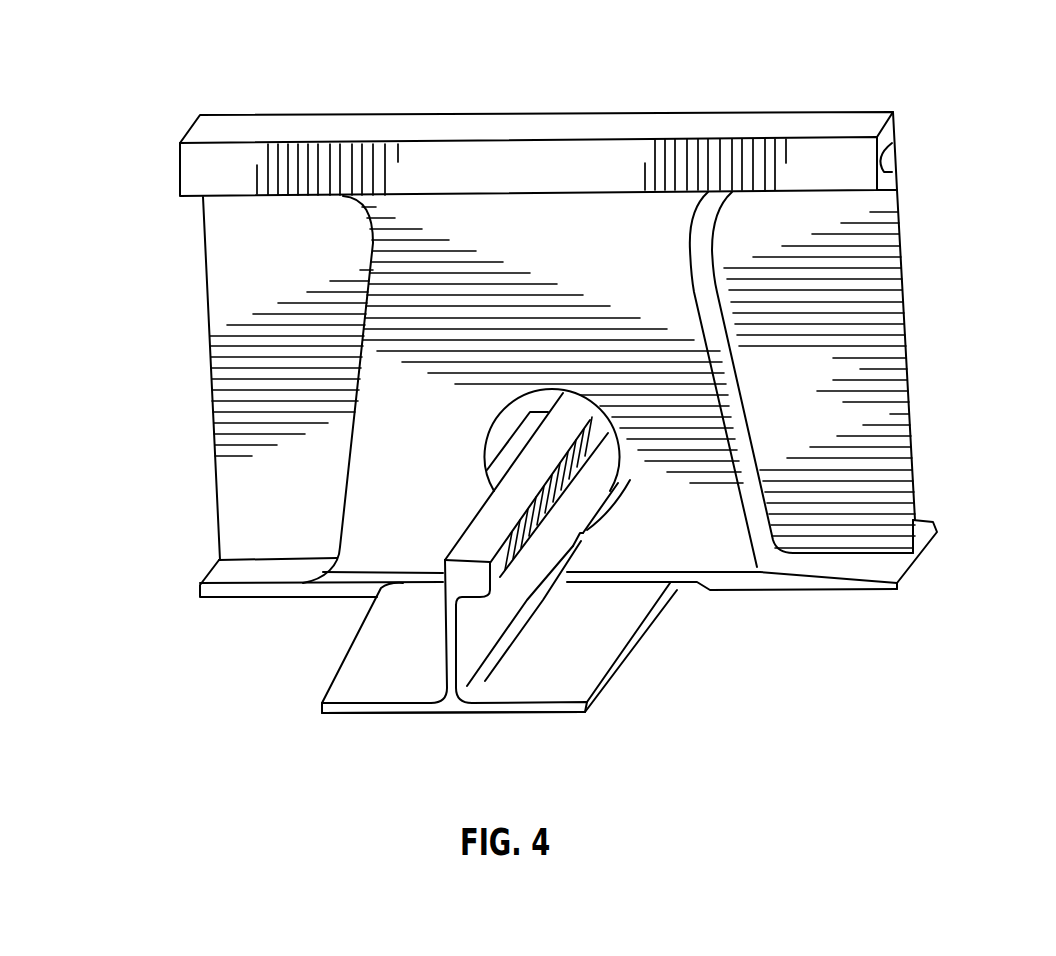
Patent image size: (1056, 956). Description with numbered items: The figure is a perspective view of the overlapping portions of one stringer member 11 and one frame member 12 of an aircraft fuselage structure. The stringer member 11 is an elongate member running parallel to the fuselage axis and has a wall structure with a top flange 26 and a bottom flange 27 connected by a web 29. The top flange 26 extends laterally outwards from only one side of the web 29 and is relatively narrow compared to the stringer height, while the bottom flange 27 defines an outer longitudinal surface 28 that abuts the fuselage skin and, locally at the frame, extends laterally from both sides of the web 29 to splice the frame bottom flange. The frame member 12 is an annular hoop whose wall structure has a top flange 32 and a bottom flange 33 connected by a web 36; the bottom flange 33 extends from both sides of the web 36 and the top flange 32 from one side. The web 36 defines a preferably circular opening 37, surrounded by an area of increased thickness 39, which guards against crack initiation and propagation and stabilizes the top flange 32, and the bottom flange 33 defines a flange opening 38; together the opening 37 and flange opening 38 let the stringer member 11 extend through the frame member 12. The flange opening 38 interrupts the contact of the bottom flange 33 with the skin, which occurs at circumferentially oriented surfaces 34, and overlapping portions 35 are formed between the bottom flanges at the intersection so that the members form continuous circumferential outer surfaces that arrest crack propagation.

The stringer member 11 is at (514, 601).
The frame member 12 is at (586, 340).
The top flange 26 is at (480, 577).
The bottom flange 27 is at (350, 713).
The outer longitudinal surface 28 is at (455, 713).
The web 29 is at (447, 637).
The top flange 32 is at (532, 155).
The bottom flange 33 is at (887, 568).
The circumferentially oriented surfaces 34 is at (257, 597).
The overlapping portions 35 is at (413, 573).
The web 36 is at (830, 339).
The opening 37 is at (538, 392).
The flange opening 38 is at (587, 567).
The area of increased thickness 39 is at (372, 435).